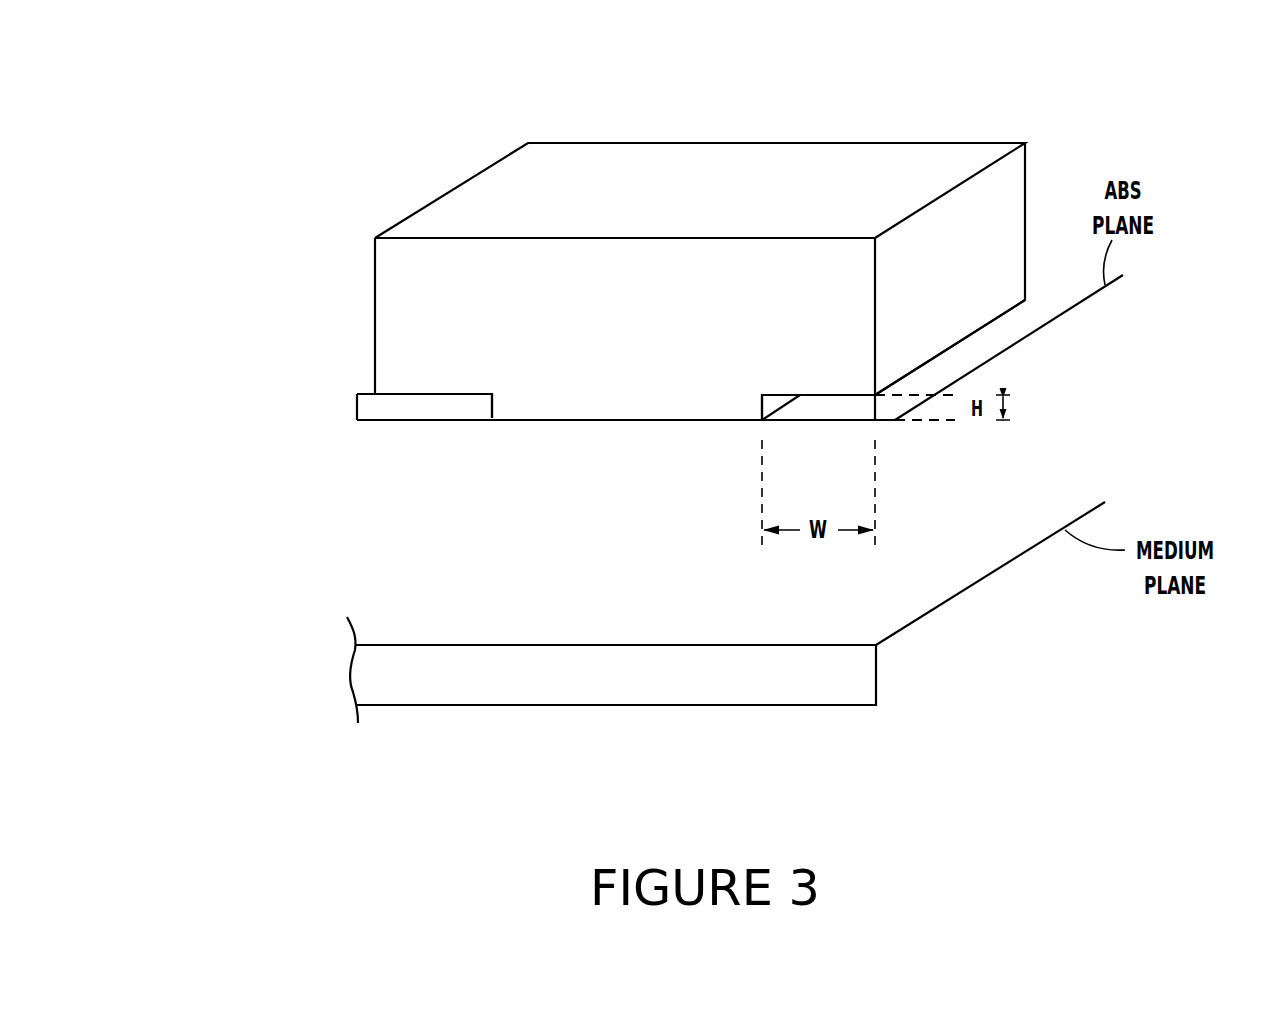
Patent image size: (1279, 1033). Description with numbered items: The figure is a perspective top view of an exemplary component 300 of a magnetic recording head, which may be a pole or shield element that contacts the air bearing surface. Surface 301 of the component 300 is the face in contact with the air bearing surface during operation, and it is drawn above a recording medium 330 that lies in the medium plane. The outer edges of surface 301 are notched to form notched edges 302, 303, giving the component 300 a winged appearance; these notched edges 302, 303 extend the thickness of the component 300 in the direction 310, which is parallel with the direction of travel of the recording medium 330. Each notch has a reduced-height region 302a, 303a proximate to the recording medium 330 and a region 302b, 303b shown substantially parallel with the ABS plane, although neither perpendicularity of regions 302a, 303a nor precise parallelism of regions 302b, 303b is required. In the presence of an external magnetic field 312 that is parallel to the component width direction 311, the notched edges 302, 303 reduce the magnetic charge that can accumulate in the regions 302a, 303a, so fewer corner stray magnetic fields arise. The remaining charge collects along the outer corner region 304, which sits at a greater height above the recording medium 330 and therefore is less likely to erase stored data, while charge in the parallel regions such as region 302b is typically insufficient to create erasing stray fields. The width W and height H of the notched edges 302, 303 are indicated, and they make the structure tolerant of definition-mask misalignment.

The component 300 is at (158, 57).
The surface 301 is at (633, 424).
The notched edge 302 is at (492, 432).
The region 302a is at (500, 411).
The region 302b is at (415, 391).
The notched edge 303 is at (875, 432).
The region 303a is at (758, 408).
The region 303b is at (820, 394).
The outer corner region 304 is at (357, 394).
The direction 310 is at (1052, 369).
The component width direction 311 is at (720, 103).
The external magnetic field 312 is at (328, 315).
The recording medium 330 is at (583, 689).